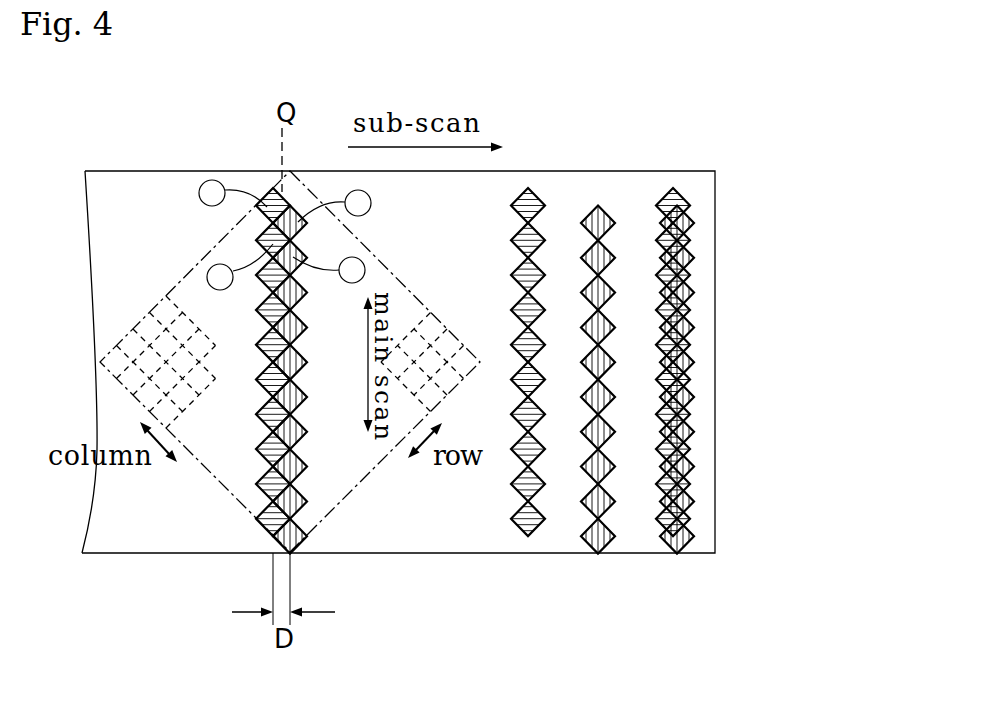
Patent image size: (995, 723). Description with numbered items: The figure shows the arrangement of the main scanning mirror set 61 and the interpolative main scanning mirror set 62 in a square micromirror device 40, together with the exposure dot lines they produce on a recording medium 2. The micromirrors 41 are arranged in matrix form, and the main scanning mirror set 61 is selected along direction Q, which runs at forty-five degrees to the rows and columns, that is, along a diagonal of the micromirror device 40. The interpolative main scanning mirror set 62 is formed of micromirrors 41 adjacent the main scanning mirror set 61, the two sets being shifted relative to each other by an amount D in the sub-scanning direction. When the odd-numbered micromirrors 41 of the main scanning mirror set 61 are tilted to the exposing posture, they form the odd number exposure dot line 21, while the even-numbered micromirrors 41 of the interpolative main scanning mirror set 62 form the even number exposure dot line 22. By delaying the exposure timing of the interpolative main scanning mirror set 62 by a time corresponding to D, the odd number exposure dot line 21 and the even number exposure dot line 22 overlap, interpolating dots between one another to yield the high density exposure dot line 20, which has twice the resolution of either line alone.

The recording medium 2 is at (611, 171).
The micromirror device 40 is at (290, 384).
The micromirrors 41 is at (160, 306).
The main scanning mirror set 61 is at (248, 458).
The interpolative main scanning mirror set 62 is at (315, 458).
The high density exposure dot line 20 is at (684, 567).
The odd number exposure dot line 21 is at (519, 549).
The even number exposure dot line 22 is at (600, 567).